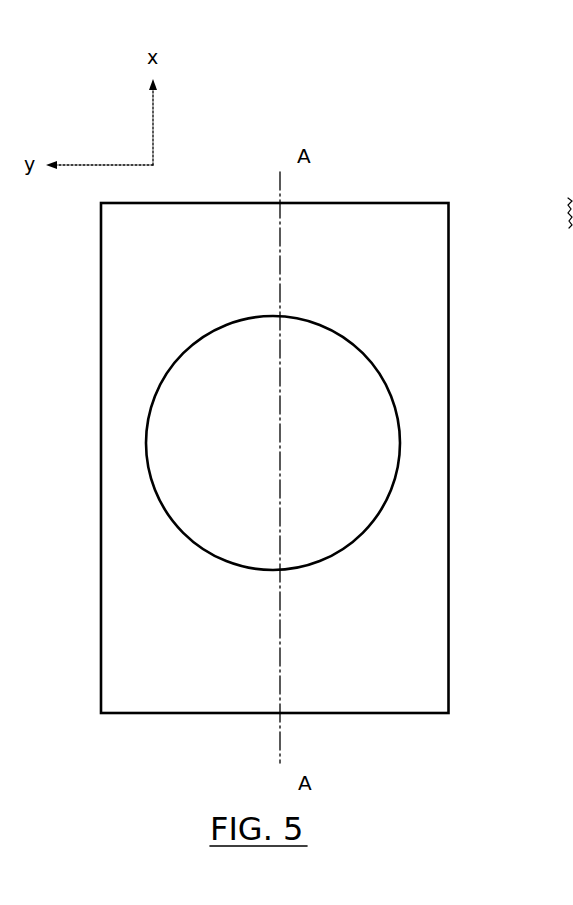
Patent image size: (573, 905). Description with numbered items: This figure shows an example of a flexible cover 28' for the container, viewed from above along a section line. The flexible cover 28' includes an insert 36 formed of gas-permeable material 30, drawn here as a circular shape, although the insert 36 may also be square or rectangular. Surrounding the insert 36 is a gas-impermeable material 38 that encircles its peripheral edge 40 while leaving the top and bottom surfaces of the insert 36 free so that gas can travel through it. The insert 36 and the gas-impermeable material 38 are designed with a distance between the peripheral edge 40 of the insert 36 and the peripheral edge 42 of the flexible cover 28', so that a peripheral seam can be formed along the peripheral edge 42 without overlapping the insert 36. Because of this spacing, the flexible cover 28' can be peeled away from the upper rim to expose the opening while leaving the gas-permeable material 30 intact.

The flexible cover 28' is at (304, 386).
The gas-impermeable material 38 is at (427, 302).
The gas-permeable material 30 is at (330, 434).
The insert 36 is at (327, 443).
The peripheral edge of the insert 40 is at (393, 488).
The peripheral edge of the flexible cover 42 is at (450, 597).